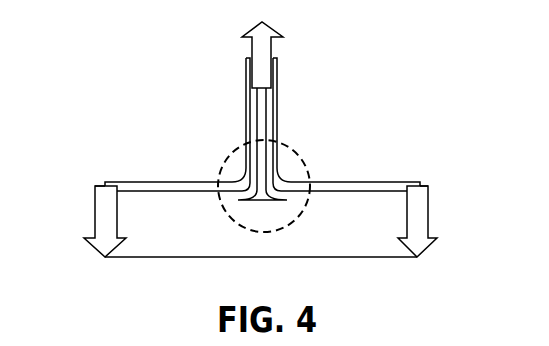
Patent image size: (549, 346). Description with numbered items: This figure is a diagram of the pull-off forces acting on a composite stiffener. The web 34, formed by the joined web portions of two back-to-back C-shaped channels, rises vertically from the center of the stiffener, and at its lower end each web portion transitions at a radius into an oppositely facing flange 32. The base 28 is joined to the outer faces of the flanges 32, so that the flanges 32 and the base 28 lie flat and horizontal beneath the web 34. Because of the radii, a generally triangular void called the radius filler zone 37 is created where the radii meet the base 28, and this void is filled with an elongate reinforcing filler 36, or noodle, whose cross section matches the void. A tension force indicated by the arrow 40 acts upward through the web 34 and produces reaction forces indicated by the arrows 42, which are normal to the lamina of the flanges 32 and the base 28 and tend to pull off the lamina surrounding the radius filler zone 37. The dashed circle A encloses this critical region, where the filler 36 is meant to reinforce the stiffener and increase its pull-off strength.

The base 28 is at (167, 238).
The flange 32 is at (137, 184).
The web 34 is at (255, 105).
The reinforcing filler 36 is at (271, 167).
The radius filler zone 37 is at (257, 190).
The tension force arrow 40 is at (257, 48).
The reaction force arrows 42 is at (107, 218).
The detail region A is at (308, 167).